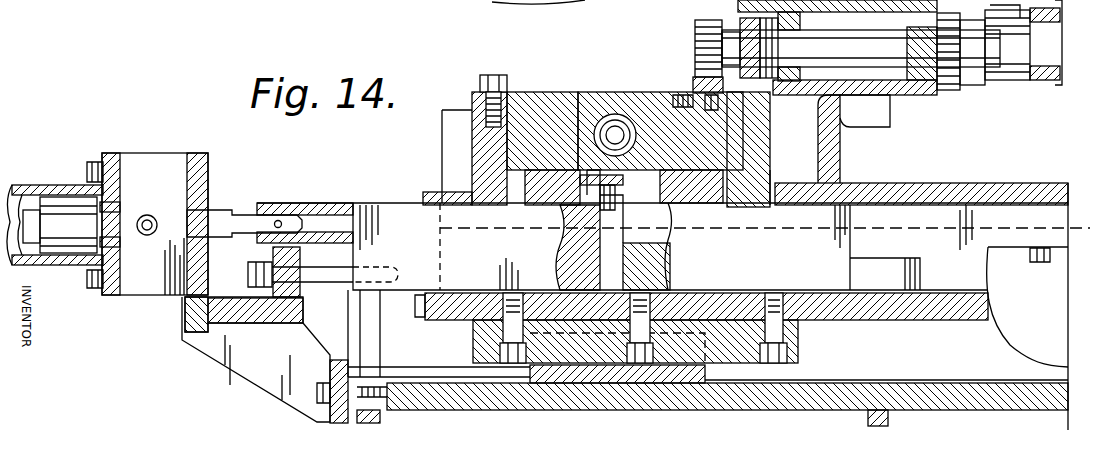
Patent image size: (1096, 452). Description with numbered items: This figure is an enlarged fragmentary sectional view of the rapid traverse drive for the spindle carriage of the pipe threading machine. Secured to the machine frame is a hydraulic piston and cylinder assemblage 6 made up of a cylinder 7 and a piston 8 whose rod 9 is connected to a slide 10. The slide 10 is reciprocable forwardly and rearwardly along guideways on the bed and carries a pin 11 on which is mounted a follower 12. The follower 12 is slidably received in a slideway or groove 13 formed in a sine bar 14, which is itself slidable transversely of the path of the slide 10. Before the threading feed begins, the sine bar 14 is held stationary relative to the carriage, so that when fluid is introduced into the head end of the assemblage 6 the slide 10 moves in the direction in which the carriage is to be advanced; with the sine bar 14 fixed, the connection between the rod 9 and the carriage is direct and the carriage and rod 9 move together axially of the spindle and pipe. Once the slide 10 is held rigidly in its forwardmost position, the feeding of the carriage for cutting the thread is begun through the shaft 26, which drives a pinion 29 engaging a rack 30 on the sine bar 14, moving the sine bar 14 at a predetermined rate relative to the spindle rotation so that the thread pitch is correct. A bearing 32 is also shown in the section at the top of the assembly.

The hydraulic piston and cylinder assemblage 6 is at (43, 180).
The cylinder 7 is at (73, 185).
The piston 8 is at (63, 243).
The rod 9 is at (245, 215).
The slide 10 is at (636, 262).
The pin 11 is at (670, 253).
The follower 12 is at (547, 205).
The slideway or groove 13 is at (590, 165).
The sine bar 14 is at (530, 107).
The shaft 26 is at (1010, 60).
The pinion 29 is at (705, 50).
The rack 30 is at (700, 90).
The bearing 32 is at (615, 113).